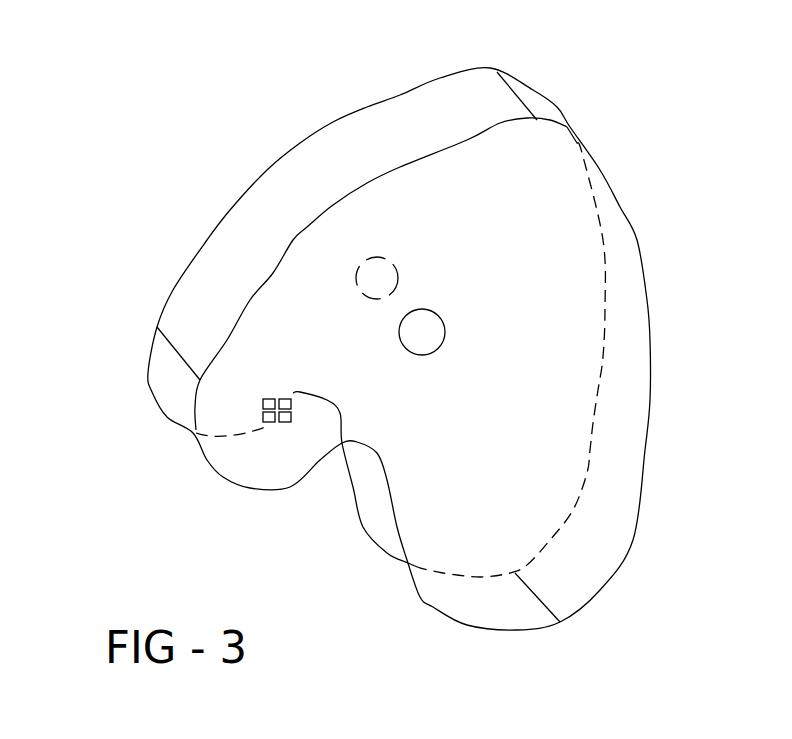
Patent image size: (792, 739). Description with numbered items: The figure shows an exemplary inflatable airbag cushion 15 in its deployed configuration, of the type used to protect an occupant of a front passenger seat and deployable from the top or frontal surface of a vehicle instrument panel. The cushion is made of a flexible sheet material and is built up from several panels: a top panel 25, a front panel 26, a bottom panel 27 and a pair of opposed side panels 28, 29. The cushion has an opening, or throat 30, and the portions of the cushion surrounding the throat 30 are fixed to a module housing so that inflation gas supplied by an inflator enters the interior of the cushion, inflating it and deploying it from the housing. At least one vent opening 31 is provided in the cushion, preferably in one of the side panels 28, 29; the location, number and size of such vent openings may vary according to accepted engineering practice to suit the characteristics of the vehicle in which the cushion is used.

The inflatable airbag cushion 15 is at (383, 108).
The top panel 25 is at (238, 235).
The front panel 26 is at (542, 115).
The bottom panel 27 is at (407, 577).
The side panel 28 is at (633, 395).
The side panel 29 is at (173, 393).
The throat 30 is at (395, 270).
The vent opening 31 is at (293, 393).